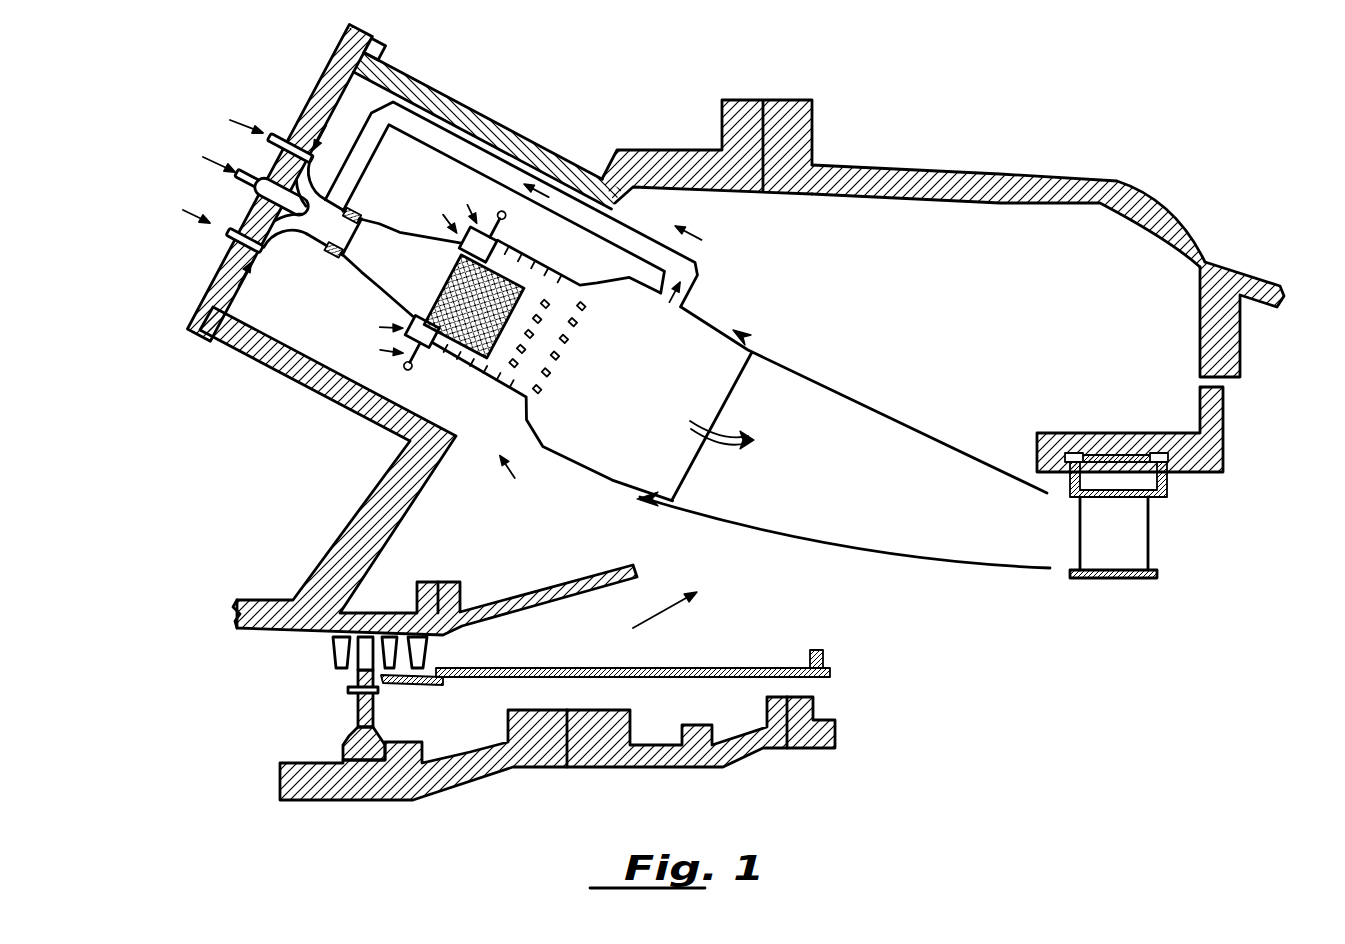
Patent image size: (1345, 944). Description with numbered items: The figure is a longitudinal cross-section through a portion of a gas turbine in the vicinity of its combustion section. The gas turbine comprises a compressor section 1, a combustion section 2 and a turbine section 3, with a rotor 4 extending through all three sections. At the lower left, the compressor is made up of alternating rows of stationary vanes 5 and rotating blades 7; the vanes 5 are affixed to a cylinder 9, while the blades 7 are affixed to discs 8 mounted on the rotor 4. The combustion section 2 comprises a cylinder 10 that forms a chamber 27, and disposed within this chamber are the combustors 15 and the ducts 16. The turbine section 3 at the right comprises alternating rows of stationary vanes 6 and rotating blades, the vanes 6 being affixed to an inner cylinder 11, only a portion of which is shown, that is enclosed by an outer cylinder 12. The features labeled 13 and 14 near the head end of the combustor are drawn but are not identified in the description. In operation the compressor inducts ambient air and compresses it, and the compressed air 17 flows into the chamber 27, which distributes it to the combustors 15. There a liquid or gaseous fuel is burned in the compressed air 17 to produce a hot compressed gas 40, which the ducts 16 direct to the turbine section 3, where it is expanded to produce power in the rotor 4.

The compressor section 1 is at (228, 610).
The combustion section 2 is at (838, 138).
The turbine section 3 is at (1158, 590).
The rotor 4 is at (477, 773).
The stationary vanes 5 is at (340, 647).
The stationary vanes 6 is at (1150, 530).
The rotating blades 7 is at (363, 660).
The discs 8 is at (377, 712).
The cylinder 9 is at (260, 600).
The cylinder 10 is at (943, 177).
The inner cylinder 11 is at (1107, 437).
The outer cylinder 12 is at (1267, 277).
The cooling air duct 13 is at (492, 120).
The end flange 14 is at (334, 58).
The combustors 15 is at (380, 293).
The ducts 16 is at (880, 407).
The compressed air 17 is at (677, 610).
The chamber 27 is at (1004, 311).
The hot compressed gas 40 is at (725, 432).